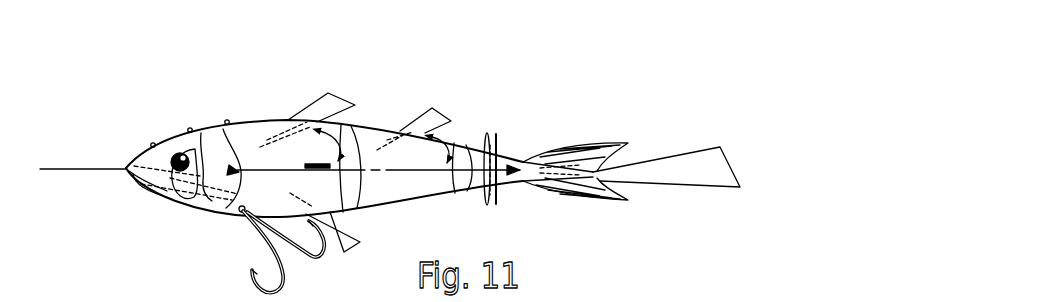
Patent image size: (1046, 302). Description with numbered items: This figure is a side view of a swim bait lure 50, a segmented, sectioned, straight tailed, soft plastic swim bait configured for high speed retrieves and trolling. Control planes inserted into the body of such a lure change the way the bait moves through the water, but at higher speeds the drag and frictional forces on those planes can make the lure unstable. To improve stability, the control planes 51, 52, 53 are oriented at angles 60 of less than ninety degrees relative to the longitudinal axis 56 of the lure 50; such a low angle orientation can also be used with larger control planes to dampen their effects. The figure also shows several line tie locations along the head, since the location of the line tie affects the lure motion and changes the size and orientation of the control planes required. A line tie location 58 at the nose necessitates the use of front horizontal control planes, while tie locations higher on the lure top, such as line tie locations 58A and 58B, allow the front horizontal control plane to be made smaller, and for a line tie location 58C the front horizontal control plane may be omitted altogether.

The swim bait lure 50 is at (113, 222).
The control plane 51 is at (322, 105).
The control plane 52 is at (343, 242).
The control plane 53 is at (446, 116).
The longitudinal axis 56 is at (408, 170).
The line tie location 58 is at (122, 177).
The line tie location 58A is at (147, 142).
The line tie location 58B is at (185, 127).
The line tie location 58C is at (222, 118).
The angle 60 is at (320, 134).